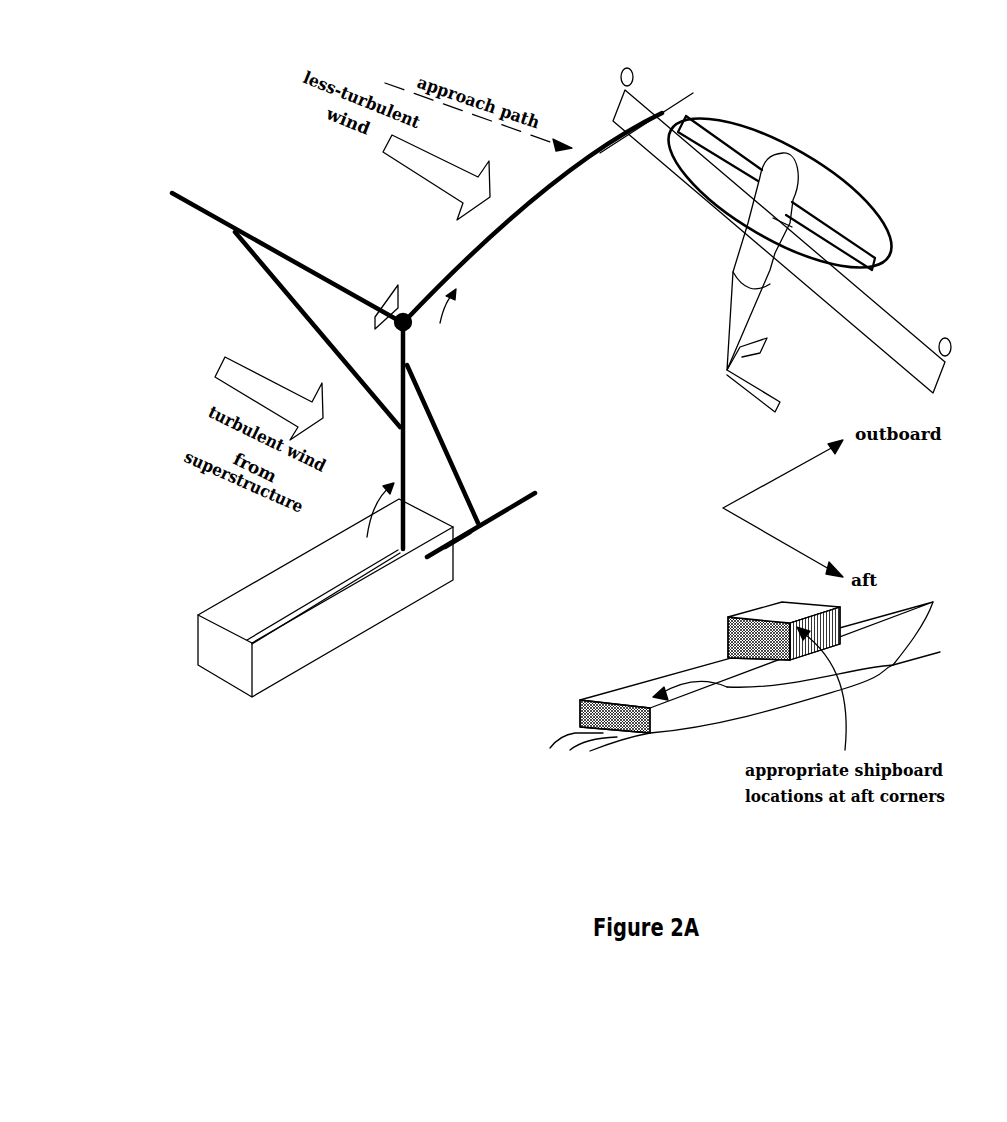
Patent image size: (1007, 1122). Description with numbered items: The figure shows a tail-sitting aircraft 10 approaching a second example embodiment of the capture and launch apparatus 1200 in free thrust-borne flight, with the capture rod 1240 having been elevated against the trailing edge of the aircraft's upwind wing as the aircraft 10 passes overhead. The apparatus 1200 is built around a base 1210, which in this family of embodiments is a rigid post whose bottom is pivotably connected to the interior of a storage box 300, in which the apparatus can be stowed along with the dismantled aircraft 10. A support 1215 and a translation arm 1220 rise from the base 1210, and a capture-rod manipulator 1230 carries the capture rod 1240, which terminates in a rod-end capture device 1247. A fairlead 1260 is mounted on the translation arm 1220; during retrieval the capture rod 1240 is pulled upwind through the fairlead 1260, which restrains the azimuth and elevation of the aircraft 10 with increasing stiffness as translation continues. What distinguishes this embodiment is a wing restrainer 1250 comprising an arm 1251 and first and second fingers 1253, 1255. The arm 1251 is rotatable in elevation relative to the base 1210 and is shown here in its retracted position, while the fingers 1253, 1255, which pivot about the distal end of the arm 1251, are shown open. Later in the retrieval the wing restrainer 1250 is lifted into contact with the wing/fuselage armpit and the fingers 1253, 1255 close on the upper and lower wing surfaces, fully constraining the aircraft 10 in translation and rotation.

The tail-sitting aircraft 10 is at (915, 180).
The storage box 300 is at (198, 707).
The capture and launch apparatus 1200 is at (202, 302).
The base 1210 is at (401, 455).
The support 1215 is at (293, 303).
The translation arm 1220 is at (193, 193).
The capture-rod manipulator 1230 is at (412, 328).
The capture rod 1240 is at (487, 237).
The rod-end capture device 1247 is at (695, 90).
The wing restrainer 1250 is at (475, 428).
The arm 1251 is at (463, 473).
The first finger 1253 is at (458, 553).
The second finger 1255 is at (510, 515).
The fairlead 1260 is at (387, 287).